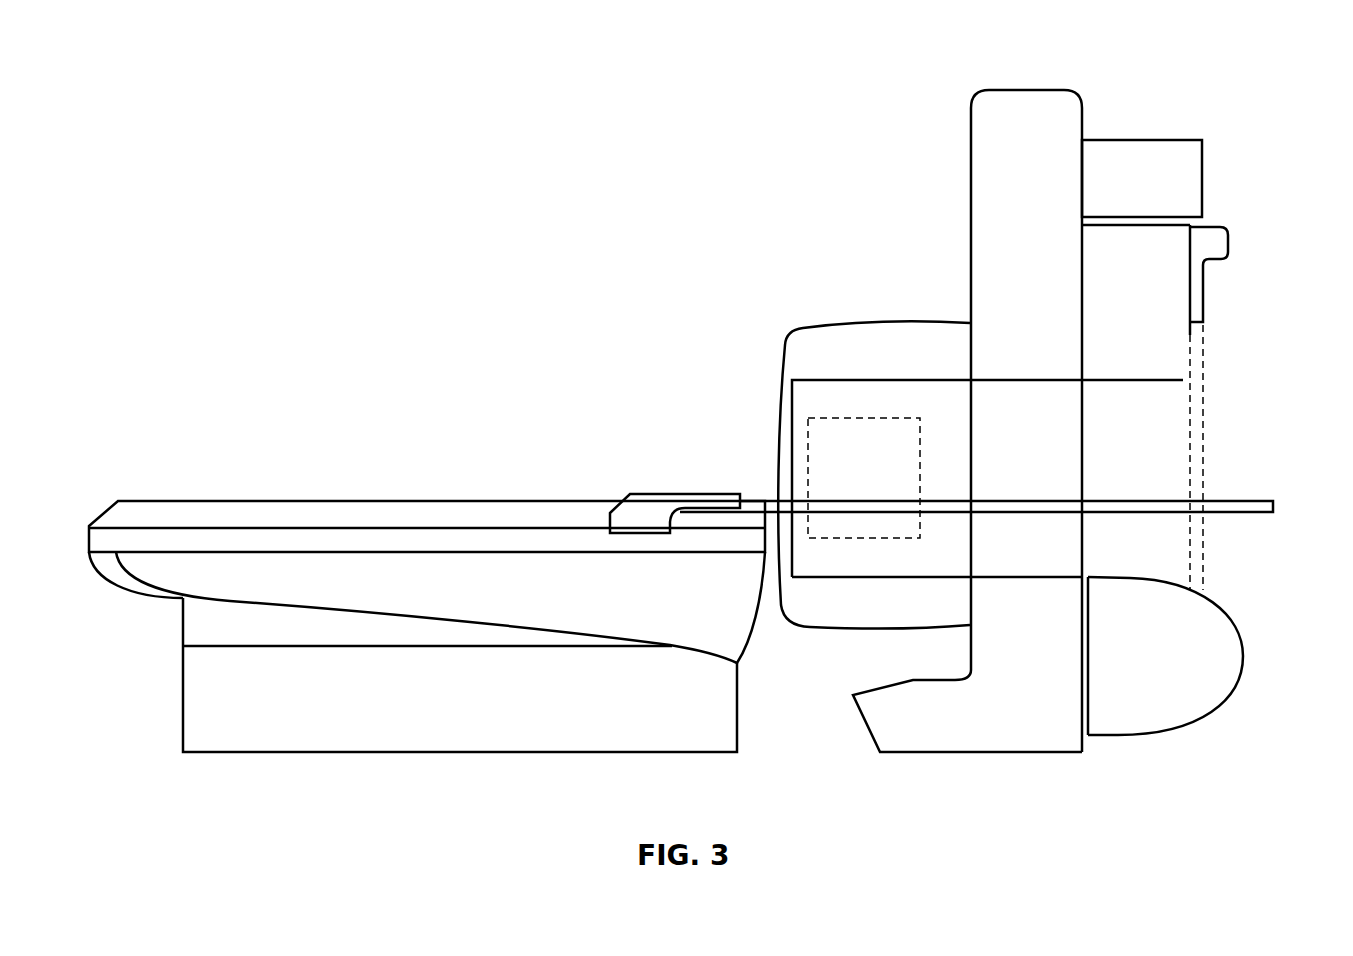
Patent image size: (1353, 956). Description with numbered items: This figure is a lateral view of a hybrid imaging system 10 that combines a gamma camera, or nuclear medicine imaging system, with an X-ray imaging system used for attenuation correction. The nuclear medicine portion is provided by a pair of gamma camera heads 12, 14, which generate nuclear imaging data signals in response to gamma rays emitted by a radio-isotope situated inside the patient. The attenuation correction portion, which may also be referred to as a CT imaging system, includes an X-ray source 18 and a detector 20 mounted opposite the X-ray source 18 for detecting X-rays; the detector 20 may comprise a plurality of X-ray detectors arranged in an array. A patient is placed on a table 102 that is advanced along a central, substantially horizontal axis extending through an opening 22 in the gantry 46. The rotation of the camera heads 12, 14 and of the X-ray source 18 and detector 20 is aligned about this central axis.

The hybrid imaging system 10 is at (917, 51).
The gamma camera head 12 is at (835, 345).
The gamma camera head 14 is at (980, 474).
The X-ray source 18 is at (1167, 280).
The detector 20 is at (1147, 705).
The opening 22 is at (1158, 433).
The gantry 46 is at (1031, 90).
The table 102 is at (1262, 507).